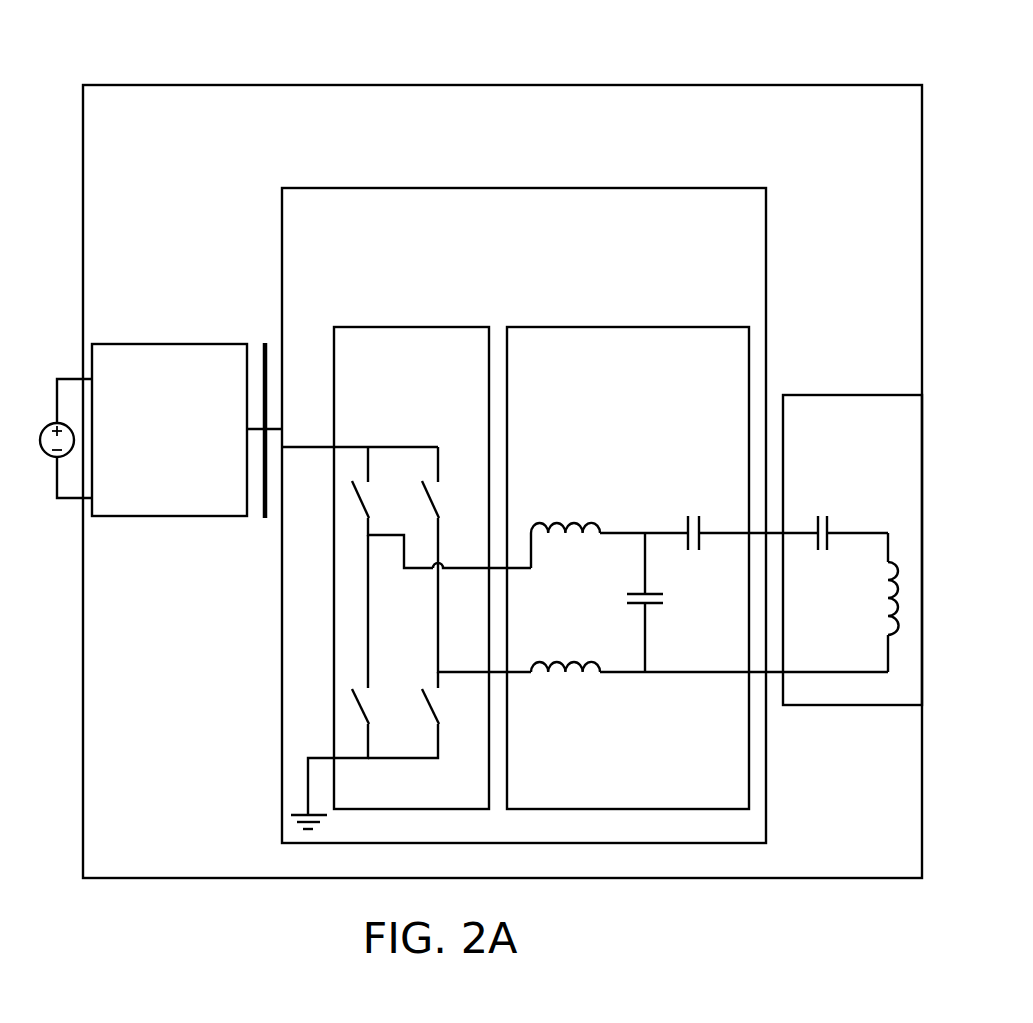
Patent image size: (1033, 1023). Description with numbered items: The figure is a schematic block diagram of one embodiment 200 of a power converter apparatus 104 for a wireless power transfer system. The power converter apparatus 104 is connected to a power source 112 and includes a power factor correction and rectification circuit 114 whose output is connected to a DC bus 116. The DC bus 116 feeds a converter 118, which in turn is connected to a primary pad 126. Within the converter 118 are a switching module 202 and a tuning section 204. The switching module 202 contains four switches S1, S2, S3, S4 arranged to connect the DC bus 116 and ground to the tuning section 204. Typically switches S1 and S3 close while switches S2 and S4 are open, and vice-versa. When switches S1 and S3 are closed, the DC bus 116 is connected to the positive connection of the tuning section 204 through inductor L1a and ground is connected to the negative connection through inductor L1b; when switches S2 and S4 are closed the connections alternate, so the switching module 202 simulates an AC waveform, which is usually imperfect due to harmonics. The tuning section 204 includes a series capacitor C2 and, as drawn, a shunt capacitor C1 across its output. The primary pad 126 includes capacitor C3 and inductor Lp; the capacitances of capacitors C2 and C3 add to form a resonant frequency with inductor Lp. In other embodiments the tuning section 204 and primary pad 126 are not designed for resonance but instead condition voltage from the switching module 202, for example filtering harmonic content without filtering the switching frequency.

The embodiment of a power converter apparatus 200 is at (136, 28).
The power converter apparatus 104 is at (483, 146).
The converter 118 is at (505, 249).
The switching module 202 is at (392, 414).
The tuning section 204 is at (648, 387).
The power factor correction and rectification circuit 114 is at (191, 481).
The power source 112 is at (48, 438).
The DC bus 116 is at (265, 518).
The primary pad 126 is at (873, 484).
The switch S1 is at (392, 507).
The switch S2 is at (355, 675).
The switch S3 is at (420, 715).
The switch S4 is at (476, 559).
The inductor L1a is at (609, 545).
The inductor L1b is at (709, 682).
The capacitor C1 is at (661, 602).
The series capacitor C2 is at (747, 547).
The capacitor C3 is at (847, 547).
The inductor Lp is at (878, 602).